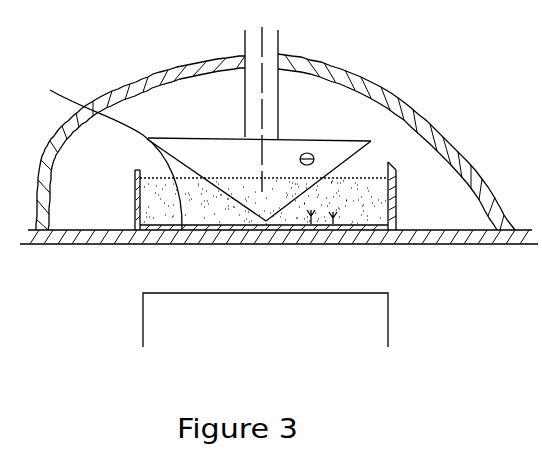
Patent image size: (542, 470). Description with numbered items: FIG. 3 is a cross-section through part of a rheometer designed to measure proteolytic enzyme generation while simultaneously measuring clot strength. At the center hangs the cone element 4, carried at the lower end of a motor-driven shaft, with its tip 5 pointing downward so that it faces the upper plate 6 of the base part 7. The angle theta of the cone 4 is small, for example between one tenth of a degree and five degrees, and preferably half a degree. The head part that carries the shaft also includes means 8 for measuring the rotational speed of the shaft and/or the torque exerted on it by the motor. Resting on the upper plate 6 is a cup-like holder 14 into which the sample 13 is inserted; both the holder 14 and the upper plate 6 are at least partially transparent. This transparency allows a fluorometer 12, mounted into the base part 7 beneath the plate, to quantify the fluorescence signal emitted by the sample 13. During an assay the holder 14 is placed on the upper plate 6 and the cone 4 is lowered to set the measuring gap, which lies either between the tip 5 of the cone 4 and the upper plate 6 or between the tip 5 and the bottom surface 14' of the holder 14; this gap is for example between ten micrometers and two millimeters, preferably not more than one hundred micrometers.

The cone element 4 is at (203, 155).
The tip 5 is at (270, 228).
The upper plate 6 is at (409, 231).
The base part 7 is at (103, 273).
The means for measuring rotational speed and/or torque 8 is at (275, 142).
The fluorometer 12 is at (295, 315).
The sample 13 is at (165, 192).
The holder 14 is at (231, 196).
The bottom surface 14' is at (98, 153).